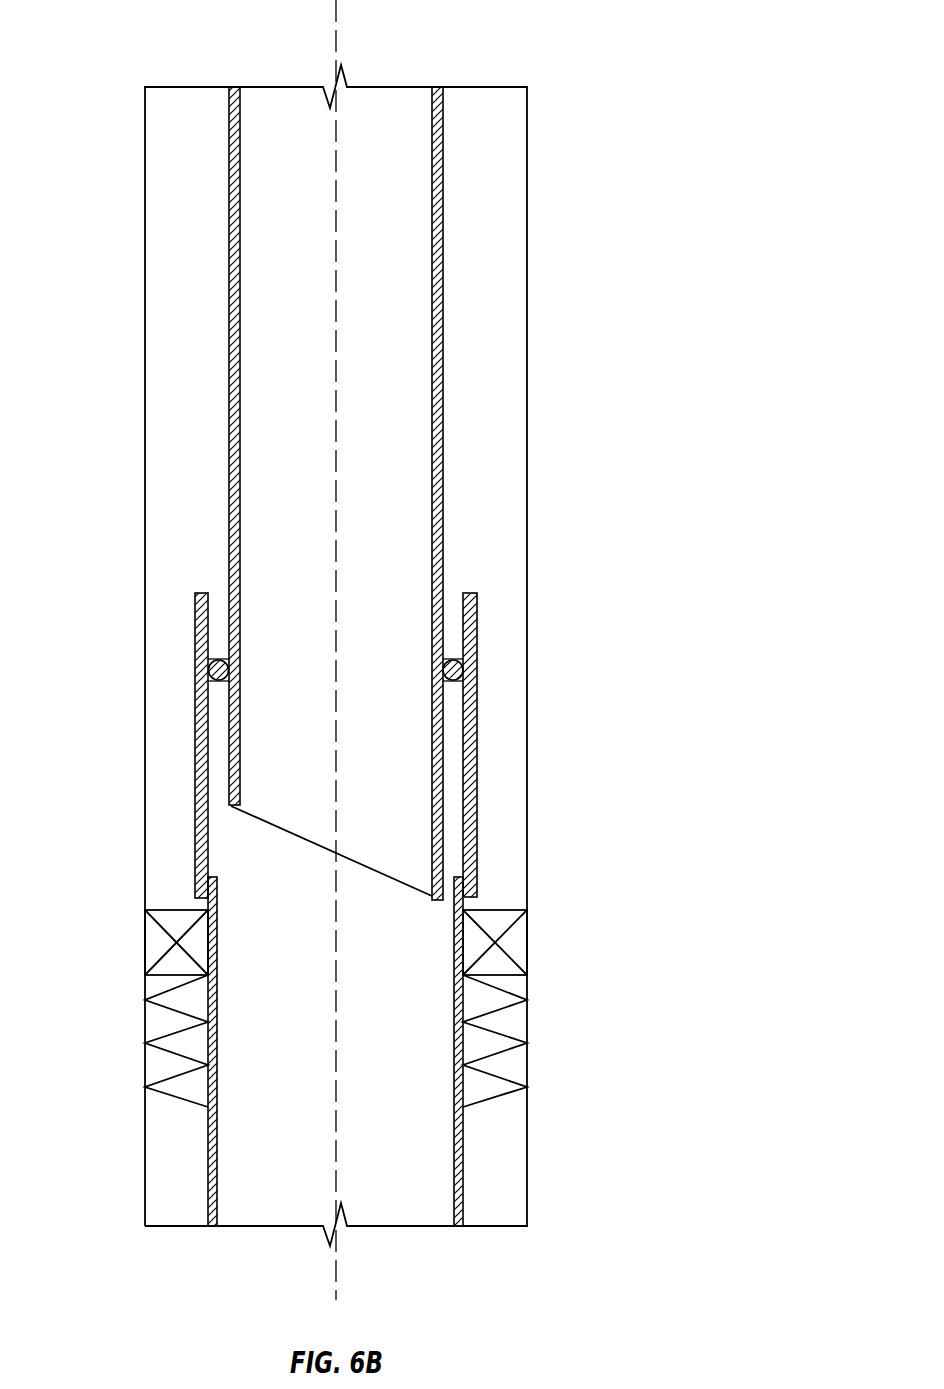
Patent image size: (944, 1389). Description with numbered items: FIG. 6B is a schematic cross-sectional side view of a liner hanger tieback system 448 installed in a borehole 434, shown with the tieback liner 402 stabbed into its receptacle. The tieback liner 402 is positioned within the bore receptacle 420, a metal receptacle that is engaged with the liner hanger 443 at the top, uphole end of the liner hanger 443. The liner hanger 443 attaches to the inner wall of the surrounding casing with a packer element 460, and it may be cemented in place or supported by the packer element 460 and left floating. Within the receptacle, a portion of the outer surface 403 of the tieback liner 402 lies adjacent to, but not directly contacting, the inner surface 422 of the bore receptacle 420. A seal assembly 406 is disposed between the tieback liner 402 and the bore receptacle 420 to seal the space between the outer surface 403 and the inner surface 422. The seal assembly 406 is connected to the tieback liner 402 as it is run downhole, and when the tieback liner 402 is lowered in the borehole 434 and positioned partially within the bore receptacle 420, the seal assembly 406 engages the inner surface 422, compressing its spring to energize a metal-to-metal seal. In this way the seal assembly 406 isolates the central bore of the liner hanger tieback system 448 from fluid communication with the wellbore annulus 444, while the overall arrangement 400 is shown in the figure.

The downhole tool assembly 400 is at (651, 45).
The tieback liner 402 is at (229, 478).
The outer surface of the tieback liner 403 is at (450, 575).
The seal assembly 406 is at (206, 670).
The bore receptacle 420 is at (195, 820).
The inner surface of the bore receptacle 422 is at (214, 855).
The borehole 434 is at (533, 1177).
The liner hanger 443 is at (188, 1090).
The wellbore annulus 444 is at (200, 116).
The liner hanger tieback system 448 is at (591, 187).
The packer element 460 is at (533, 945).